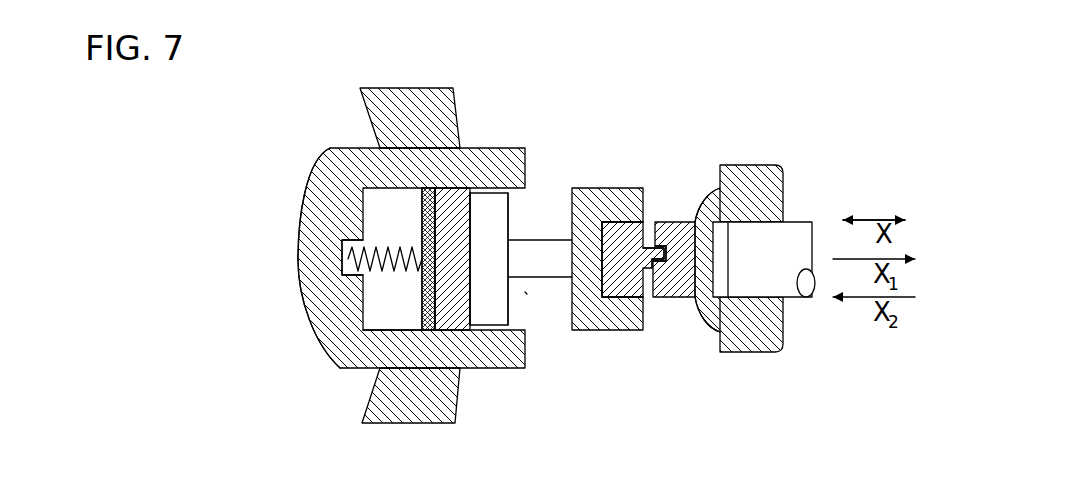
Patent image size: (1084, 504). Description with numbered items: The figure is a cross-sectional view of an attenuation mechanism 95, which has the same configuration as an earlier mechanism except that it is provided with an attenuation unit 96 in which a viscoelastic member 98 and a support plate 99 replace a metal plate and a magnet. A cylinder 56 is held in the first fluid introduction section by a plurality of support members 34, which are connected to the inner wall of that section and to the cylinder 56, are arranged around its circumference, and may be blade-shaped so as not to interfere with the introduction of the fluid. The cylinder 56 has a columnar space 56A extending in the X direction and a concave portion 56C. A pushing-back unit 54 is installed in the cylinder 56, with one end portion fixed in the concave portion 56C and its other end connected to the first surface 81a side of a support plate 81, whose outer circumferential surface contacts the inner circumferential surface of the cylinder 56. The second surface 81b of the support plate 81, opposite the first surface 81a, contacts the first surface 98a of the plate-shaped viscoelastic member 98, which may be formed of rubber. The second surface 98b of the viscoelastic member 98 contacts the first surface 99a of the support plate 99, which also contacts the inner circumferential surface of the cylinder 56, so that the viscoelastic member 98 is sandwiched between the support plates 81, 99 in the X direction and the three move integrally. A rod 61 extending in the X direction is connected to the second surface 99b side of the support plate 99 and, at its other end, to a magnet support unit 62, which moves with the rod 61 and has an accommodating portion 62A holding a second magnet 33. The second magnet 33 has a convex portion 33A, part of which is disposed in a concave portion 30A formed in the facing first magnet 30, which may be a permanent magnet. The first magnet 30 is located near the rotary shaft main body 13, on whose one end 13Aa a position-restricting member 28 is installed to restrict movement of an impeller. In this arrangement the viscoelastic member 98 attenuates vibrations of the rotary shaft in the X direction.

The rotary shaft main body 13 is at (797, 303).
The one end 13Aa is at (750, 232).
The position-restricting member 28 is at (706, 193).
The first magnet 30 is at (665, 220).
The concave portion 30A is at (664, 262).
The second magnet 33 is at (617, 302).
The convex portion 33A is at (650, 263).
The support members 34 is at (410, 108).
The pushing-back unit 54 is at (350, 267).
The cylinder 56 is at (338, 360).
The space 56A is at (378, 320).
The concave portion 56C is at (345, 248).
The rod 61 is at (550, 257).
The magnet support unit 62 is at (588, 186).
The accommodating portion 62A is at (622, 228).
The support plate 81 is at (428, 320).
The first surface 81a is at (432, 210).
The second surface 81b is at (440, 208).
The attenuation mechanism 95 is at (300, 212).
The attenuation unit 96 is at (527, 295).
The viscoelastic member 98 is at (457, 303).
The first surface 98a is at (434, 290).
The second surface 98b is at (474, 226).
The support plate 99 is at (490, 315).
The first surface 99a is at (468, 228).
The second surface 99b is at (510, 210).